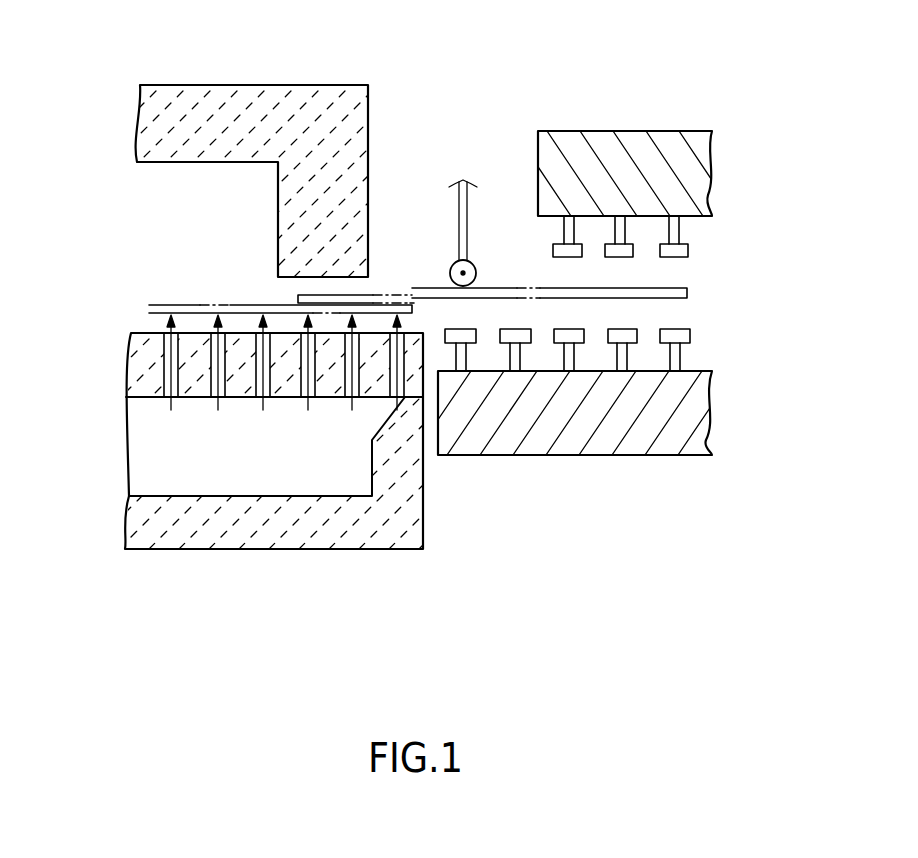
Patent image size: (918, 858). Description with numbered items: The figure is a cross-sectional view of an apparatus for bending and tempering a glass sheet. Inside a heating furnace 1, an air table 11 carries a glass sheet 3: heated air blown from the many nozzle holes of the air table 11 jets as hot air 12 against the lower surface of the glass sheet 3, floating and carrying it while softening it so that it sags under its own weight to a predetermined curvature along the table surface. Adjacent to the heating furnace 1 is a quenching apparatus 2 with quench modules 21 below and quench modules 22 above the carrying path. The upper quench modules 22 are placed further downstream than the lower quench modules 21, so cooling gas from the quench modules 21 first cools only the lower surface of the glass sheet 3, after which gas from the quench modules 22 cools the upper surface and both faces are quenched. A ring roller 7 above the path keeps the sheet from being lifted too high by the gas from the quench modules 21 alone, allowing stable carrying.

The heating furnace 1 is at (290, 72).
The quenching apparatus 2 is at (641, 120).
The glass sheet 3 is at (687, 292).
The ring roller 7 is at (452, 266).
The air table 11 is at (128, 363).
The hot air 12 is at (218, 400).
The quench modules below the glass sheet carrying path 21 is at (690, 334).
The quench modules above the glass sheet carrying path 22 is at (688, 250).